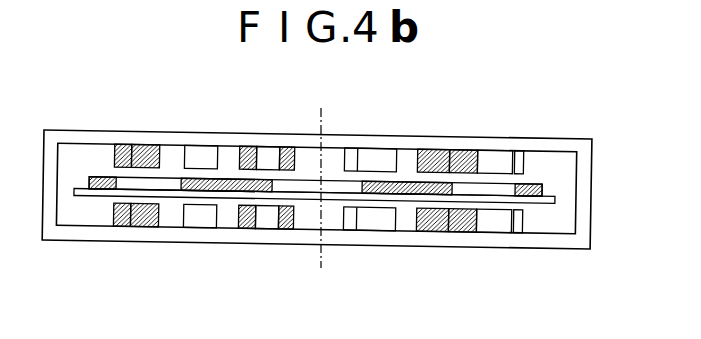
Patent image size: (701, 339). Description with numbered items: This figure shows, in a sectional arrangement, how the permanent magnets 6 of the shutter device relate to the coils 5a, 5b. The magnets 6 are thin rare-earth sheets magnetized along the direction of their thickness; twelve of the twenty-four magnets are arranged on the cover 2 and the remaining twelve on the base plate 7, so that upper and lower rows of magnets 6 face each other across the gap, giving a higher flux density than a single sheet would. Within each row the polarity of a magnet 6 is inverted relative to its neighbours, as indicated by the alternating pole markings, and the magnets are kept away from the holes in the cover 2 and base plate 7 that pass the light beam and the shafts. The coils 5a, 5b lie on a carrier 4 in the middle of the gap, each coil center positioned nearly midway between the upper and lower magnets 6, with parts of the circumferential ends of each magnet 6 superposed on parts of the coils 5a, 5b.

The cover 2 is at (583, 194).
The base plate 7 is at (570, 147).
The permanent magnets 6 is at (518, 158).
The moving shaft 4 is at (551, 204).
The coil 5a is at (315, 186).
The coil 5b is at (530, 194).